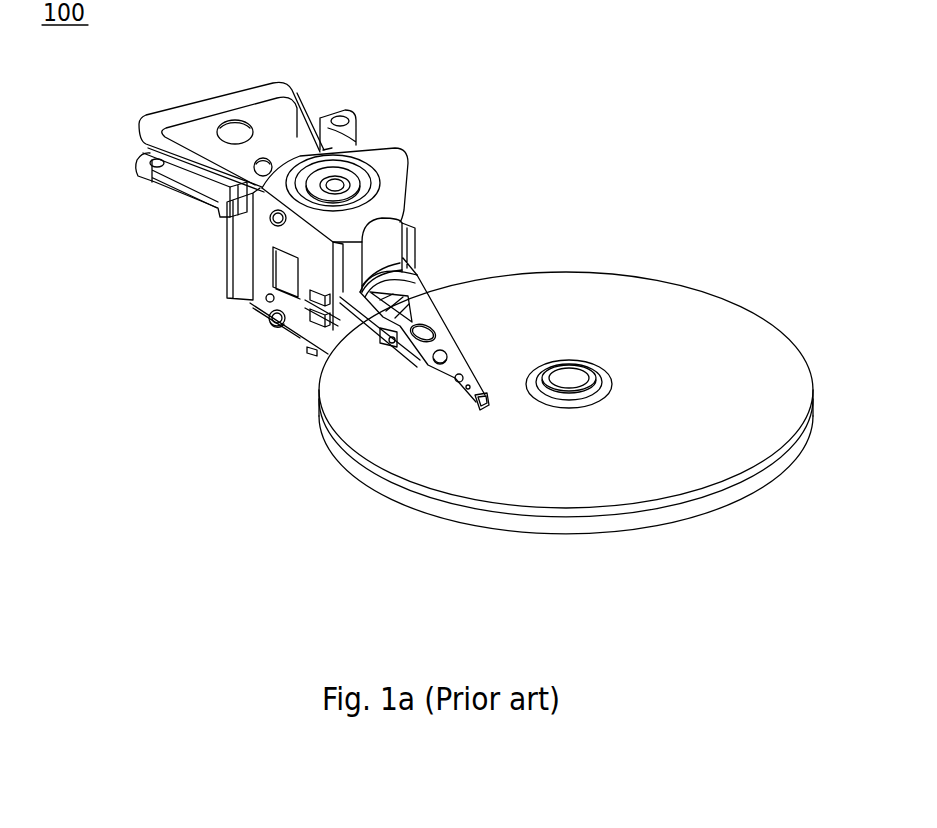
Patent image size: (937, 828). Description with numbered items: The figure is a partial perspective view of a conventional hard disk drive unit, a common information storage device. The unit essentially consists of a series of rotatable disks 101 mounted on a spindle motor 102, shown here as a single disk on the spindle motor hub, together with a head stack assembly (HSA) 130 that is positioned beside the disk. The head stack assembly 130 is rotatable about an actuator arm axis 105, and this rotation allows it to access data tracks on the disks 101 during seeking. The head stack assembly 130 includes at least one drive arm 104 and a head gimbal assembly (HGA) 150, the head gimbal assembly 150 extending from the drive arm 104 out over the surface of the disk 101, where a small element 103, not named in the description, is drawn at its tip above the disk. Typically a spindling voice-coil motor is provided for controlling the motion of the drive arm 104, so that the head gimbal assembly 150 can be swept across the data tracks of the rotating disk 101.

The rotatable disk 101 is at (693, 365).
The spindle motor 102 is at (575, 378).
The slider (head) 103 is at (482, 395).
The drive arm 104 is at (422, 315).
The actuator arm axis 105 is at (337, 185).
The head stack assembly 130 is at (400, 217).
The head gimbal assembly 150 is at (453, 360).